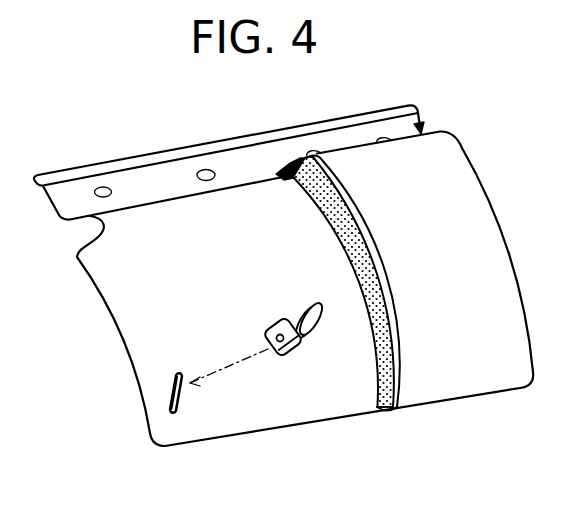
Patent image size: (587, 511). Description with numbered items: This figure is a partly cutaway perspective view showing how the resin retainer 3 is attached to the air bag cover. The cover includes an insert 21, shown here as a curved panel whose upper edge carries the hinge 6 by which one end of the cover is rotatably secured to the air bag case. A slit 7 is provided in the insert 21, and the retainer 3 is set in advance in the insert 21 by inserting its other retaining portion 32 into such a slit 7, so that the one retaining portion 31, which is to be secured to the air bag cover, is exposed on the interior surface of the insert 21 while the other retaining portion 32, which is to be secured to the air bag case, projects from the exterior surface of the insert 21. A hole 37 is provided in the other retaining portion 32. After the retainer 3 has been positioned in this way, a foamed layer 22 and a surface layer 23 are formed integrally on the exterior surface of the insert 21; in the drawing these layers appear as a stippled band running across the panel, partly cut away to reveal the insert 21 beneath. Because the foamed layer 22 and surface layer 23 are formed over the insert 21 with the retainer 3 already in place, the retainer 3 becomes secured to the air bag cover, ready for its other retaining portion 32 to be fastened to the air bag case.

The hinge 6 is at (422, 124).
The insert 21 is at (112, 325).
The foamed layer 22 is at (320, 203).
The surface layer 23 is at (360, 217).
The slit 7 is at (177, 392).
The retainer 3 is at (280, 357).
The one retaining portion 31 is at (320, 323).
The other retaining portion 32 is at (273, 330).
The hole 37 is at (292, 347).